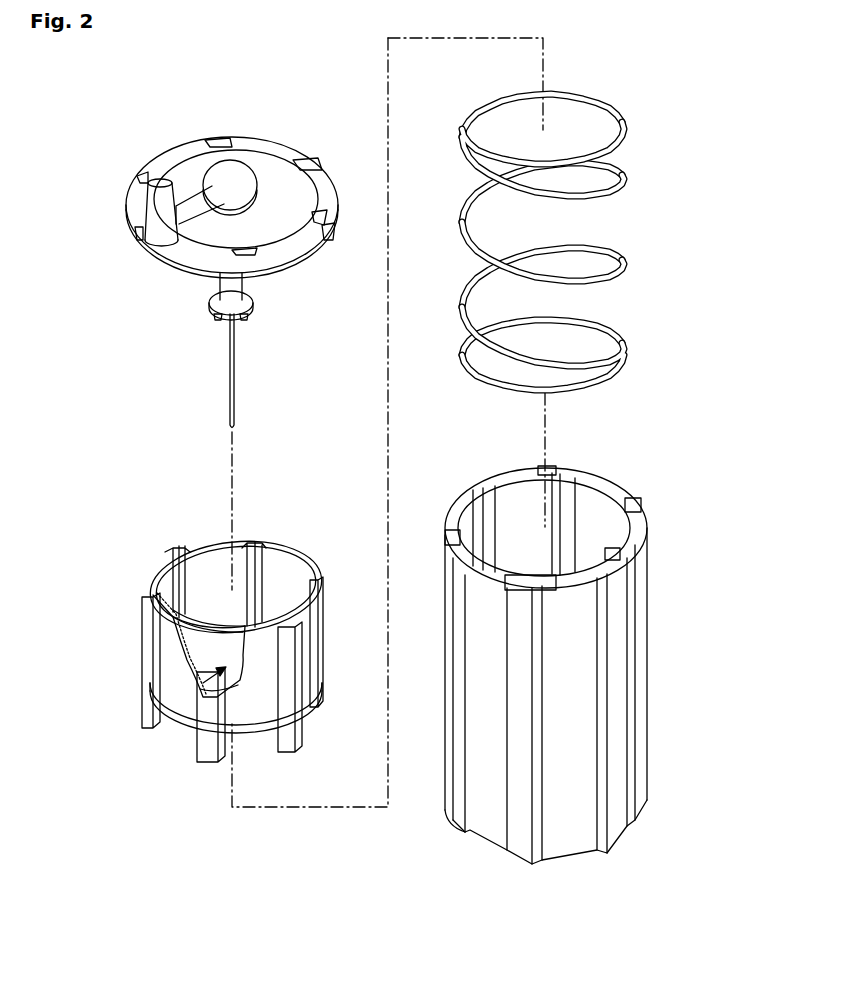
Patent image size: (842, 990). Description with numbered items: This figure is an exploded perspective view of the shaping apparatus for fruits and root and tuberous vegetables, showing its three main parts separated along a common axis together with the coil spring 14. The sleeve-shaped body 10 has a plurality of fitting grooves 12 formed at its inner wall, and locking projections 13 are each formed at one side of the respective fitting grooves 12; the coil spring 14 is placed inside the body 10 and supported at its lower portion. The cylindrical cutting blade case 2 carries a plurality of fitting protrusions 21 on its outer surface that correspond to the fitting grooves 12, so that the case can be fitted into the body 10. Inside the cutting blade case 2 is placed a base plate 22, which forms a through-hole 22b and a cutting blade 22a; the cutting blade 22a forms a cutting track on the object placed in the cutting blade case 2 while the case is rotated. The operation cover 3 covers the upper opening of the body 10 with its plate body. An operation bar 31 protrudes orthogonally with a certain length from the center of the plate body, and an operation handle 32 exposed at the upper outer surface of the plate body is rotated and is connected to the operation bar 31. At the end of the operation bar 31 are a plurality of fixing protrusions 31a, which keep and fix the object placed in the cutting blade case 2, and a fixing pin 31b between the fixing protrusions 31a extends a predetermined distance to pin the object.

The cutting blade case 2 is at (220, 639).
The operation cover 3 is at (194, 256).
The housing 10 is at (600, 647).
The fitting grooves 12 is at (645, 507).
The locking projections 13 is at (627, 490).
The coil spring 14 is at (626, 265).
The fitting protrusions 21 is at (170, 553).
The base plate 22 is at (207, 627).
The cutting blade 22a is at (243, 683).
The through-hole 22b is at (222, 655).
The operation bar 31 is at (228, 283).
The fixing protrusions 31a is at (218, 317).
The fixing pin 31b is at (231, 377).
The operation handle 32 is at (157, 204).